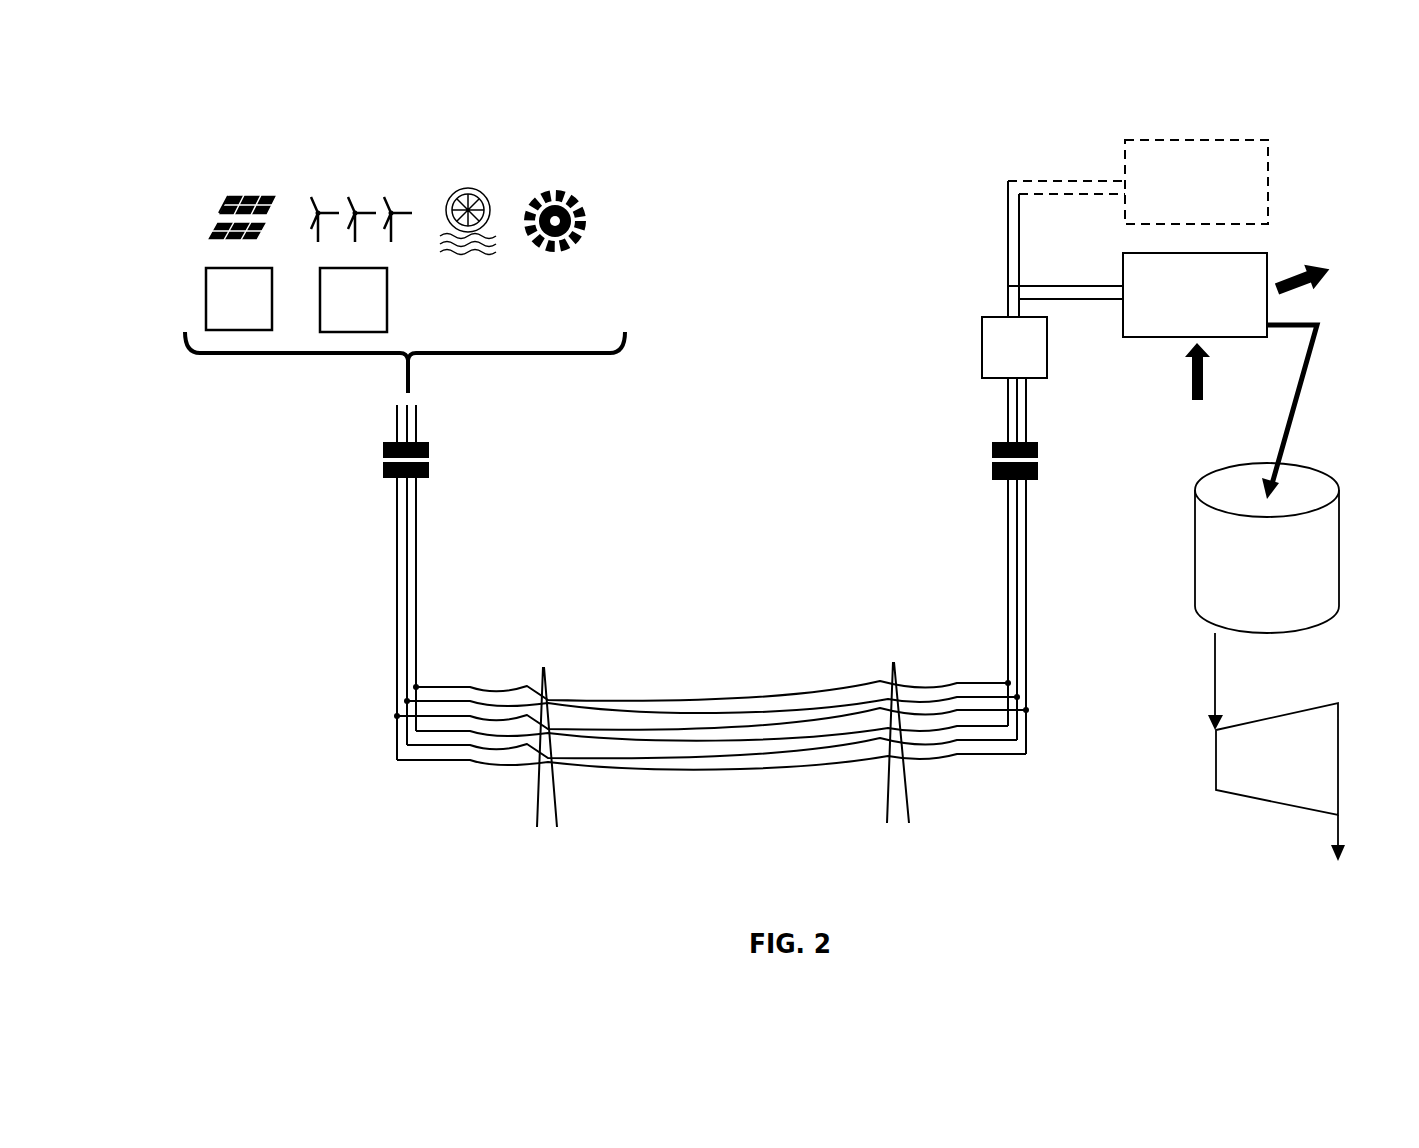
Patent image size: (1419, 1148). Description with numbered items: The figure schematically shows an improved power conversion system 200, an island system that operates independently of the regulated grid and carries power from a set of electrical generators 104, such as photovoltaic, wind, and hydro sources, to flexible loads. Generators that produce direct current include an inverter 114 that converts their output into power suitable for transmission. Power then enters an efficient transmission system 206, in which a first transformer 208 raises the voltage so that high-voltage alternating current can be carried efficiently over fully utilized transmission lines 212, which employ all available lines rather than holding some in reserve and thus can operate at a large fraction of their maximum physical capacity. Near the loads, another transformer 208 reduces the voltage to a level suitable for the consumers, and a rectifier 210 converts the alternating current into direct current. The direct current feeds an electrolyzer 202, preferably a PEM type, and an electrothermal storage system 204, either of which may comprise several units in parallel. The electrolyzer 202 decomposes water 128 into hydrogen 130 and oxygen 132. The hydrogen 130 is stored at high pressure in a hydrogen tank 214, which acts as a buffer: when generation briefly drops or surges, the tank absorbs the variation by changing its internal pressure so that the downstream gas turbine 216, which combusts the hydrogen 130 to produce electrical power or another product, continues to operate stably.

The power conversion system 200 is at (916, 103).
The electrical generator 104 is at (322, 166).
The inverter 114 is at (222, 300).
The transformer 208 is at (383, 455).
The efficient transmission system 206 is at (722, 656).
The fully utilized transmission lines 212 is at (747, 775).
The rectifier 210 is at (992, 337).
The electrothermal storage system 204 is at (1196, 182).
The electrolyzer 202 is at (1195, 295).
The oxygen 132 is at (1323, 267).
The water 128 is at (1190, 383).
The hydrogen 130 is at (1293, 417).
The hydrogen tank 214 is at (1267, 548).
The gas turbine 216 is at (1277, 759).